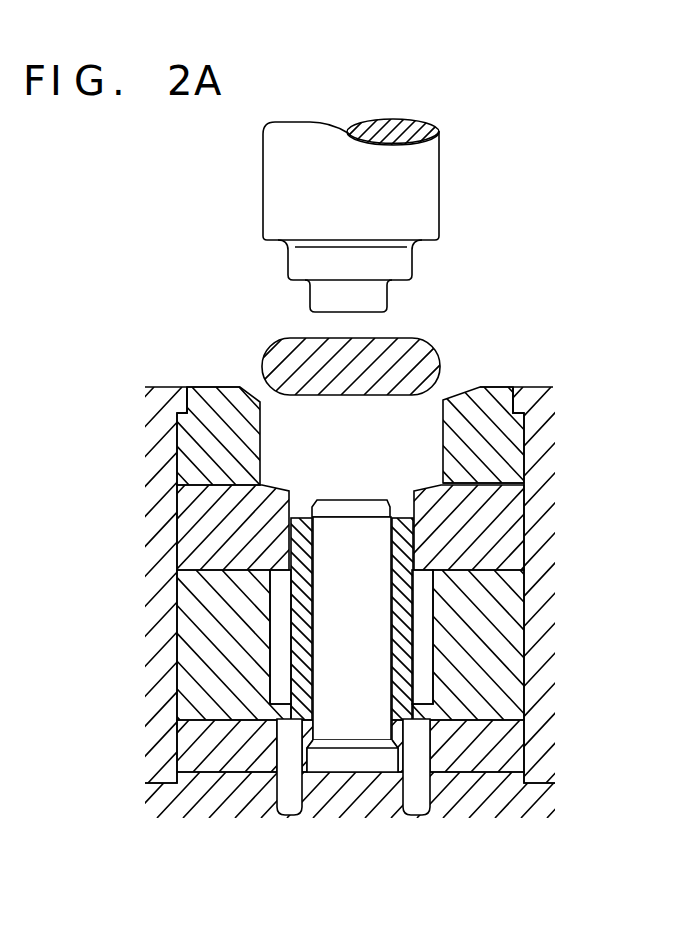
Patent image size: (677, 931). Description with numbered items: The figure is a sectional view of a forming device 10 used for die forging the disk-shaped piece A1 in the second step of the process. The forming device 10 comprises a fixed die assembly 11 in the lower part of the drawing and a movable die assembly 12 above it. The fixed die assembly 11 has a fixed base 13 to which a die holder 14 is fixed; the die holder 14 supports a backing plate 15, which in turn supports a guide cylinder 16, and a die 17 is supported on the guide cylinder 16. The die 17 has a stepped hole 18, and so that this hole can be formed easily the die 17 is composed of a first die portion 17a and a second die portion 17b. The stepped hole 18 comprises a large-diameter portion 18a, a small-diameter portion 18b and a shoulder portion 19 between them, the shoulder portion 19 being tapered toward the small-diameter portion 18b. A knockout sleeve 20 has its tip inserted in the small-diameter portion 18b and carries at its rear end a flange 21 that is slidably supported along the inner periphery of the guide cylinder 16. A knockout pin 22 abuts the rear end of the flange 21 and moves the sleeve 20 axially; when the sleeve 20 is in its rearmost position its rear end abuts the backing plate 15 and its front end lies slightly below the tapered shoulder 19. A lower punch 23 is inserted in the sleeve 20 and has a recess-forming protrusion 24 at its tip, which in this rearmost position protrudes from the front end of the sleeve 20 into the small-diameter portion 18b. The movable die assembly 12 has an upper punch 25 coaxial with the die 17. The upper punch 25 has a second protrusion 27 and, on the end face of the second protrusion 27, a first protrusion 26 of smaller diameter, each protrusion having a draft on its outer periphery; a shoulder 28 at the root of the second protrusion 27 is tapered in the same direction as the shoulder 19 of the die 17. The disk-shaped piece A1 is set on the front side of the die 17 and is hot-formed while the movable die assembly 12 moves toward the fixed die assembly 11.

The forming device 10 is at (160, 352).
The fixed die assembly 11 is at (121, 480).
The movable die assembly 12 is at (222, 207).
The fixed base 13 is at (222, 790).
The die holder 14 is at (163, 645).
The backing plate 15 is at (193, 748).
The guide cylinder 16 is at (195, 602).
The die 17 is at (166, 448).
The first die portion 17a is at (175, 415).
The second die portion 17b is at (195, 525).
The stepped hole 18 is at (430, 410).
The large-diameter portion 18a is at (437, 428).
The small-diameter portion 18b is at (407, 503).
The shoulder portion 19 is at (433, 478).
The knockout sleeve 20 is at (403, 606).
The flange 21 is at (432, 690).
The knockout pin 22 is at (422, 793).
The lower punch 23 is at (355, 720).
The recess-forming protrusion 24 is at (348, 510).
The upper punch 25 is at (273, 170).
The first protrusion 26 is at (382, 297).
The second protrusion 27 is at (378, 258).
The shoulder 28 is at (430, 243).
The disk-shaped piece A1 is at (282, 348).